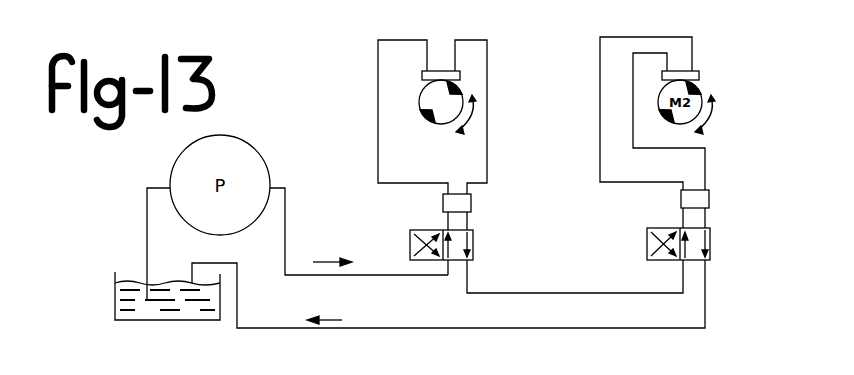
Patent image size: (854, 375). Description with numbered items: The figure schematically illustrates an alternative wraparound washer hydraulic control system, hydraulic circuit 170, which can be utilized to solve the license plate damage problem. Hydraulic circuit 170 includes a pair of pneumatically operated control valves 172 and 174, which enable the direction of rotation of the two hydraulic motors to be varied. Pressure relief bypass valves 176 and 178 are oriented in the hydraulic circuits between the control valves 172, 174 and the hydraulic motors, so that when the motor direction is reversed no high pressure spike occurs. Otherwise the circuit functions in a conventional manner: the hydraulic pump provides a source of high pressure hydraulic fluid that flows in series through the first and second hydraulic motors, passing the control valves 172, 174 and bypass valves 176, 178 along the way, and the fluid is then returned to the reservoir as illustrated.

The hydraulic circuit 170 is at (340, 125).
The pneumatically operated control valve 172 is at (473, 252).
The pneumatically operated control valve 174 is at (710, 248).
The pressure relief bypass valve 176 is at (443, 200).
The pressure relief bypass valve 178 is at (708, 197).